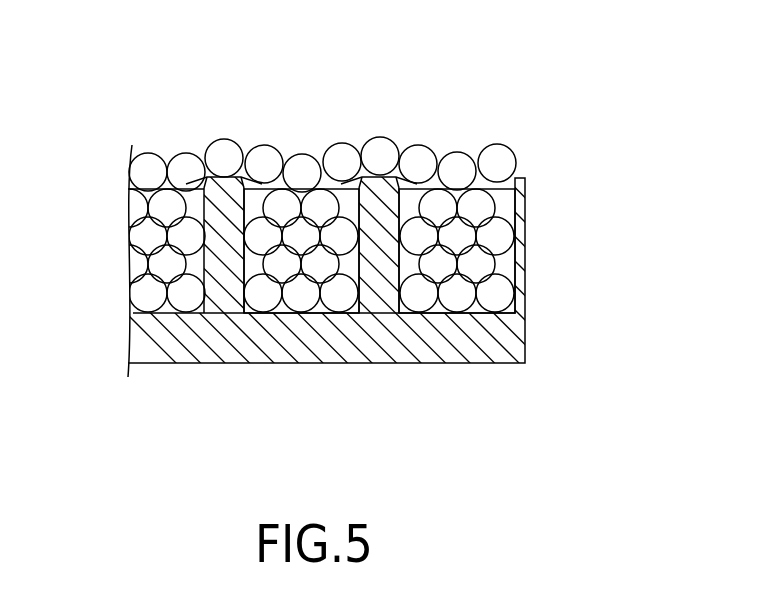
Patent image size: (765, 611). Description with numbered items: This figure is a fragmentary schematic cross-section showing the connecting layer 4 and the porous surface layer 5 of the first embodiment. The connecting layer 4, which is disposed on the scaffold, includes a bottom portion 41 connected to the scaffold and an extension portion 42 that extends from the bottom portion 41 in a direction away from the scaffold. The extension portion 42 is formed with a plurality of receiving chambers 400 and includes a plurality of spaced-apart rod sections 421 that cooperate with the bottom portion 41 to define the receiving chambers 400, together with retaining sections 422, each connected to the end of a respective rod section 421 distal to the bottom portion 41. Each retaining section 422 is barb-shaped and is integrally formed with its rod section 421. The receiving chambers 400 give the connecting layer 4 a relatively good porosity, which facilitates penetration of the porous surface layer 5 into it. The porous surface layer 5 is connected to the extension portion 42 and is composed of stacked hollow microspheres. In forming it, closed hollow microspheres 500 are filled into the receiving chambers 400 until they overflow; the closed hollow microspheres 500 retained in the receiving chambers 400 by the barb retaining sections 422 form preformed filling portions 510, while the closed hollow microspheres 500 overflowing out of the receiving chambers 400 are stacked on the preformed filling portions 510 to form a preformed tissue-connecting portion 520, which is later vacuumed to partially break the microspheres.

The connecting layer 4 is at (542, 270).
The bottom portion 41 is at (517, 342).
The extension portion 42 is at (412, 177).
The rod sections 421 is at (367, 263).
The retaining sections 422 is at (388, 188).
The receiving chambers 400 is at (340, 188).
The porous surface layer 5 is at (182, 130).
The closed hollow microspheres 500 is at (268, 146).
The preformed filling portions 510 is at (133, 238).
The preformed tissue-connecting portion 520 is at (509, 148).